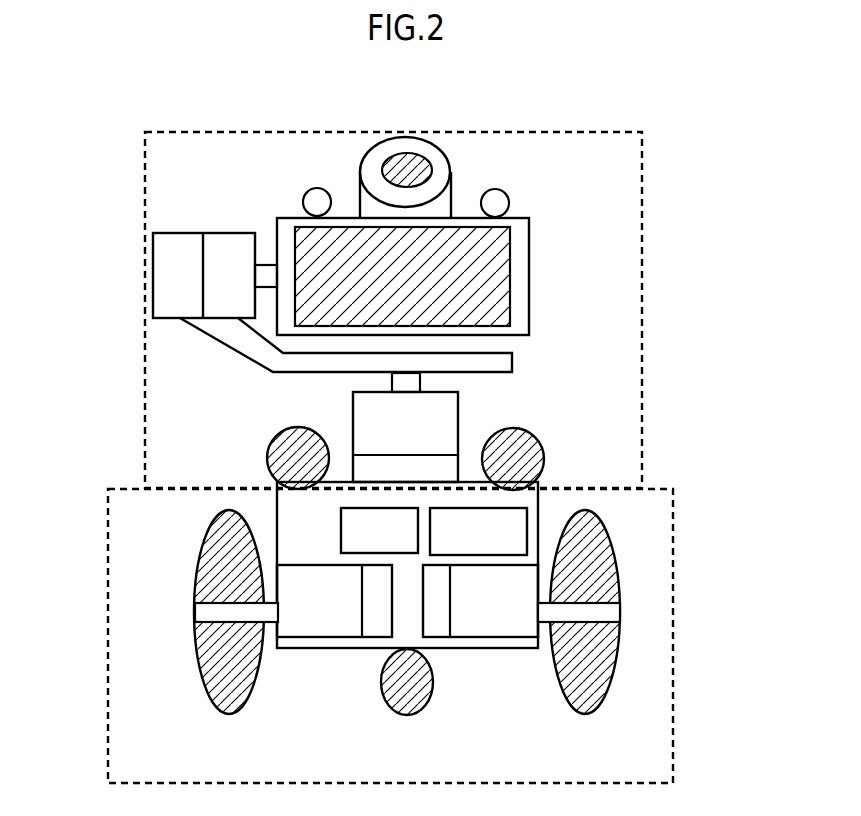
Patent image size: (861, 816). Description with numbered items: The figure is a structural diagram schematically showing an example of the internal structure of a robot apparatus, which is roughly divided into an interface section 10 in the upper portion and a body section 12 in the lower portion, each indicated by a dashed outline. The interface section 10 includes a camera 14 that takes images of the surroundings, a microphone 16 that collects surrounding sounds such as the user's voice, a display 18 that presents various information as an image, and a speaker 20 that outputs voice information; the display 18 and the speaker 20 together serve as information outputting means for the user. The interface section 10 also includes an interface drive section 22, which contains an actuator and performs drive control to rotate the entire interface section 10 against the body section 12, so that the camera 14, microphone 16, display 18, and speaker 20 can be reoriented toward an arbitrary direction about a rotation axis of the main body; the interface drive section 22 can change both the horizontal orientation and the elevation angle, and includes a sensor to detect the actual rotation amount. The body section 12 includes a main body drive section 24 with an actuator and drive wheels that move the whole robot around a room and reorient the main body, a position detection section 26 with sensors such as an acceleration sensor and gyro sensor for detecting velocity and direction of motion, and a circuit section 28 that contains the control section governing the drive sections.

The interface section 10 is at (642, 340).
The body section 12 is at (675, 500).
The camera 14 is at (447, 152).
The microphone 16 is at (483, 196).
The display 18 is at (509, 275).
The speaker 20 is at (320, 433).
The interface drive section 22 is at (195, 355).
The main body drive section 24 is at (635, 608).
The position detection section 26 is at (478, 535).
The circuit section 28 is at (352, 525).